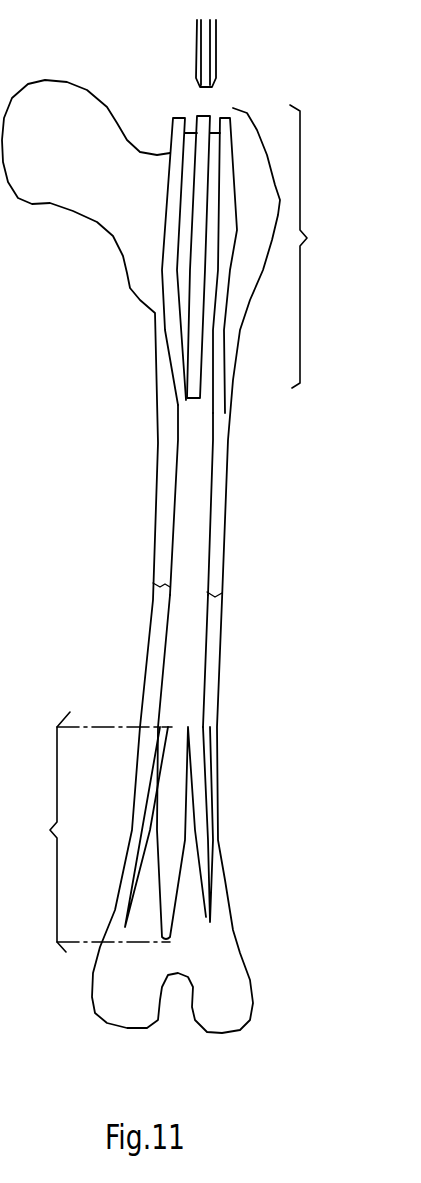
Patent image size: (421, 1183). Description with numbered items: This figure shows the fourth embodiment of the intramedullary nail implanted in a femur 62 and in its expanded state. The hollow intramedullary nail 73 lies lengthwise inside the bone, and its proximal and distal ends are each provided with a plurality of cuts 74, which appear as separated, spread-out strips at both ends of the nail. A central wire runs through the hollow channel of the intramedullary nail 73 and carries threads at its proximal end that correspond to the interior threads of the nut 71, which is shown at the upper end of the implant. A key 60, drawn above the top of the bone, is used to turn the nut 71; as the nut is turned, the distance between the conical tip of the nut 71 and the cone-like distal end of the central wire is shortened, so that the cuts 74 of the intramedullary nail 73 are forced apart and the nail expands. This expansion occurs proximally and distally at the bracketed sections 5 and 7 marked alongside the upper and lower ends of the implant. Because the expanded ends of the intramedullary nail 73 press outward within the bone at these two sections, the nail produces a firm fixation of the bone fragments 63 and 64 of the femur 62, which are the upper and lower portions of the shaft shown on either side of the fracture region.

The key 60 is at (213, 50).
The femur 62 is at (230, 493).
The bone fragment 63 is at (217, 562).
The bone fragment 64 is at (212, 652).
The nut 71 is at (185, 302).
The intramedullary nail 73 is at (190, 820).
The cuts 74 is at (212, 185).
The section 5 is at (331, 259).
The section 7 is at (52, 853).